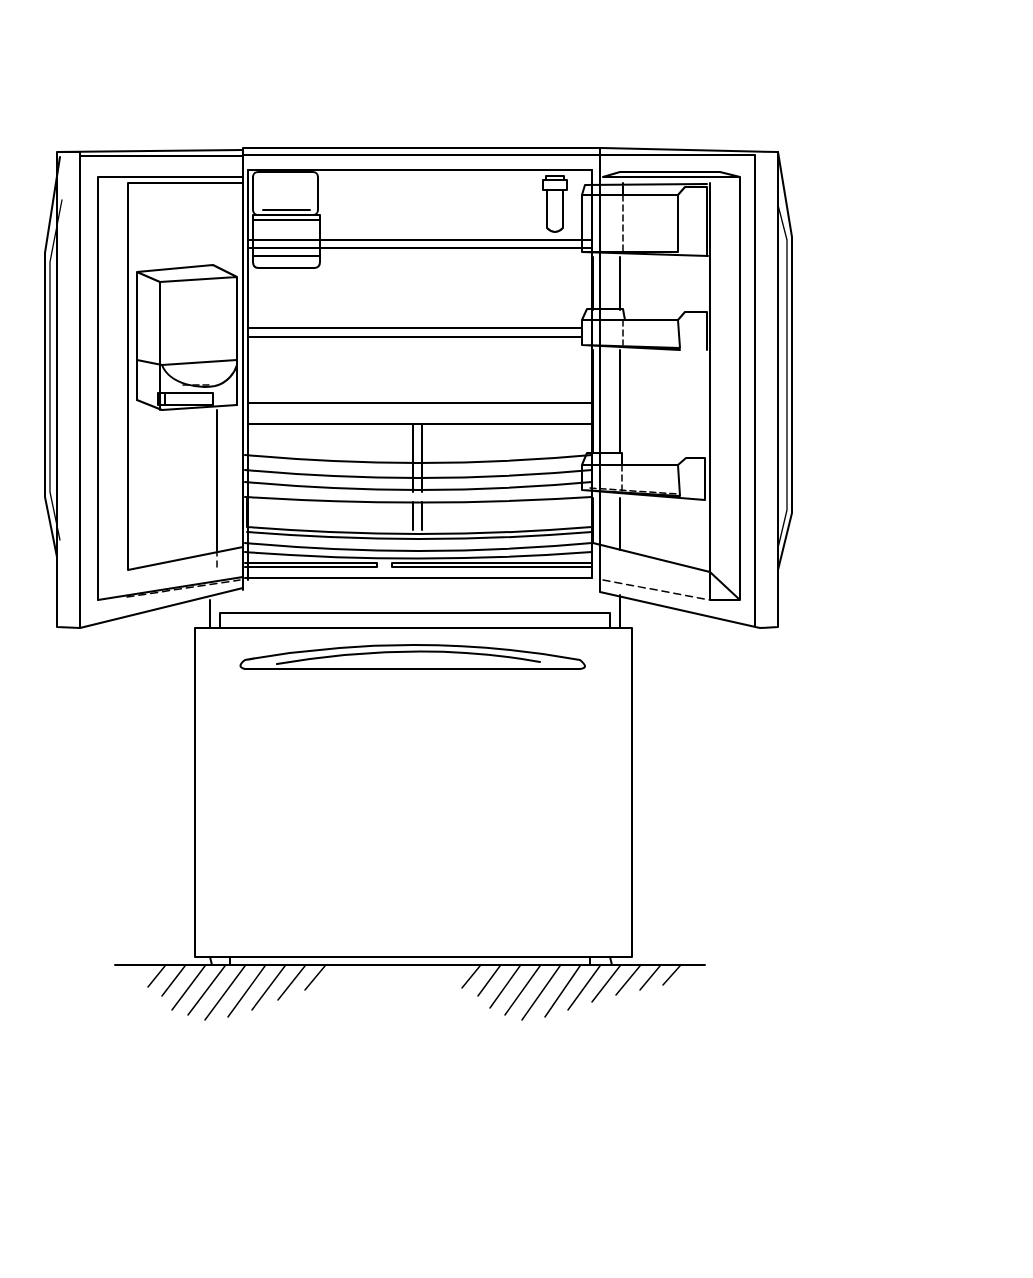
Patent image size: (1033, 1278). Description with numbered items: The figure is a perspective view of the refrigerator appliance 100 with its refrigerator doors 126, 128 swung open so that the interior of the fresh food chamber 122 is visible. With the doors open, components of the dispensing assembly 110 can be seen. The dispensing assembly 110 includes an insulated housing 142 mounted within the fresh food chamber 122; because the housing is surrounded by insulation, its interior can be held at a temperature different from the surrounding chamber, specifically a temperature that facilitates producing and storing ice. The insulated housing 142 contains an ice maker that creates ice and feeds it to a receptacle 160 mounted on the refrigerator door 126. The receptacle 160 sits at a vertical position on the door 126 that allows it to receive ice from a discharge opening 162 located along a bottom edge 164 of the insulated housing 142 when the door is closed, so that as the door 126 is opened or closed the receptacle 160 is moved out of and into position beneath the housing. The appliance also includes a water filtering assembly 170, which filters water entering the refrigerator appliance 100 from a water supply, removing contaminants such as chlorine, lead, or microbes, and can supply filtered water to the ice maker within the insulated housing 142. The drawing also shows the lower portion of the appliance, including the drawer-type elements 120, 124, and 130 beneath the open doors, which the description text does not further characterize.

The refrigerator appliance 100 is at (620, 99).
The dispensing assembly 110 is at (233, 224).
The freezer drawer 120 is at (192, 867).
The fresh food chamber 122 is at (418, 200).
The freezer chamber 124 is at (592, 740).
The refrigerator door 126 is at (110, 148).
The refrigerator door 128 is at (680, 147).
The freezer door 130 is at (593, 840).
The insulated housing 142 is at (284, 194).
The receptacle 160 is at (187, 300).
The discharge opening 162 is at (297, 268).
The bottom edge 164 is at (285, 270).
The water filtering assembly 170 is at (542, 201).